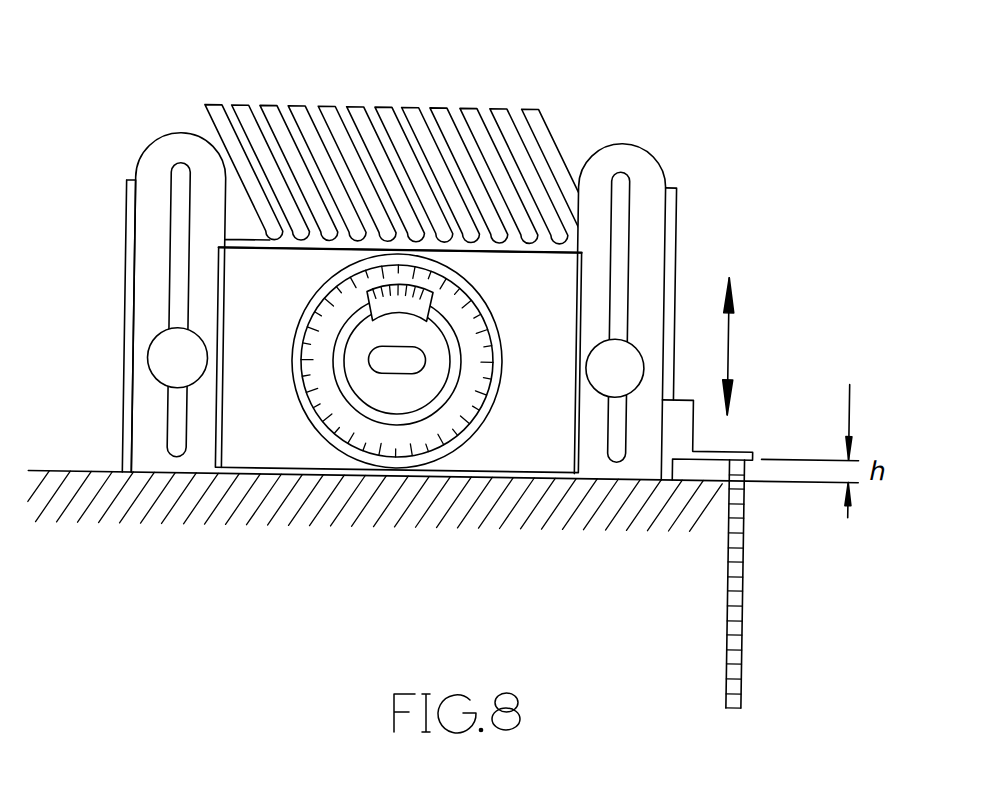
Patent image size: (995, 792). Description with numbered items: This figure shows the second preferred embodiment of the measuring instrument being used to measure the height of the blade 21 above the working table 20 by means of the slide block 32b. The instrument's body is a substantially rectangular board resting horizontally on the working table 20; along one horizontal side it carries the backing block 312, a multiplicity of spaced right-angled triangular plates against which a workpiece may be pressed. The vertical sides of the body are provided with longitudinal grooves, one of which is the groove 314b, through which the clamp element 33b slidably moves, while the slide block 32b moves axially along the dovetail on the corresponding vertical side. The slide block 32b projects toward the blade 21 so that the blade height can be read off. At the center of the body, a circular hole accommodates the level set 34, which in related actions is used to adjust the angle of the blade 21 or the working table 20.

The backing block 312 is at (409, 106).
The longitudinal groove 314b is at (618, 200).
The clamp element 33b is at (615, 365).
The level set 34 is at (486, 404).
The working table 20 is at (424, 513).
The slide block 32b is at (681, 438).
The blade 21 is at (739, 566).